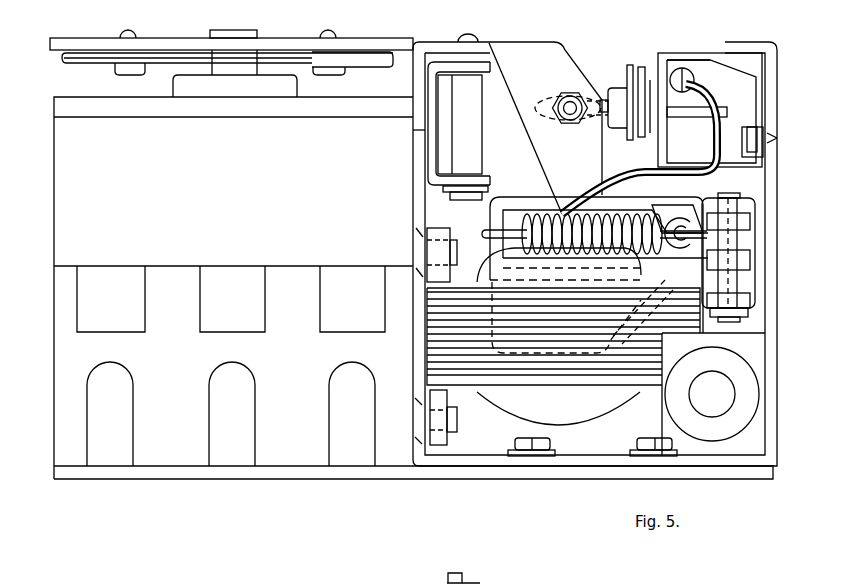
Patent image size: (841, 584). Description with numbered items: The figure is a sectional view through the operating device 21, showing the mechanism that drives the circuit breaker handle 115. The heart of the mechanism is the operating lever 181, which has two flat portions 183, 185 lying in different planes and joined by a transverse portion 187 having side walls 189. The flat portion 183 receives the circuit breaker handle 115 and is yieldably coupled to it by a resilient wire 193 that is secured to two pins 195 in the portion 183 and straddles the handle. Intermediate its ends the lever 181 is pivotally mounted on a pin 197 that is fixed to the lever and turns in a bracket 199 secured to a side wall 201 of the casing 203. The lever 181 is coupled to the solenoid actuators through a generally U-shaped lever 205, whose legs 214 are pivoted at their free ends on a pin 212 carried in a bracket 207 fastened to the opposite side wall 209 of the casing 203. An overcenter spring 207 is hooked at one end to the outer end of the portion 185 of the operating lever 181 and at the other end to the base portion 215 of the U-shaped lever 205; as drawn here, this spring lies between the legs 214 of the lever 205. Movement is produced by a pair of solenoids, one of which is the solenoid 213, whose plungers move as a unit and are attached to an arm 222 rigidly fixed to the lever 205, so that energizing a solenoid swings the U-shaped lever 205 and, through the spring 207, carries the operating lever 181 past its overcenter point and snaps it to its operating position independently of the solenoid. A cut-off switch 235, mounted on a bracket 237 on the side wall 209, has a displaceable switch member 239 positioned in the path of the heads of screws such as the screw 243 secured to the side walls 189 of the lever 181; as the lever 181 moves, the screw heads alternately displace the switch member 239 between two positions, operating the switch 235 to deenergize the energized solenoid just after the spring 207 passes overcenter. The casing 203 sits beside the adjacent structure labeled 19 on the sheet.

The base block 19 is at (228, 194).
The operating device 21 is at (491, 153).
The circuit breaker handle 115 is at (233, 32).
The operating lever 181 is at (397, 42).
The flat portion 183 is at (372, 45).
The flat portion 185 is at (703, 200).
The transverse portion 187 is at (519, 123).
The side walls 189 is at (507, 47).
The resilient wire 193 is at (282, 58).
The pins 195 is at (128, 32).
The pin 197 is at (458, 145).
The bracket 199 is at (433, 81).
The side wall 201 is at (418, 212).
The casing 203 is at (480, 463).
The U-shaped lever 205 is at (518, 200).
The overcenter spring 207 is at (570, 213).
The side wall 209 is at (768, 333).
The pin 212 is at (727, 238).
The solenoid 213 is at (545, 413).
The legs 214 is at (640, 193).
The base portion 215 is at (500, 217).
The arm 222 is at (492, 323).
The cut-off switch 235 is at (630, 77).
The bracket 237 is at (680, 172).
The switch member 239 is at (603, 100).
The screw 243 is at (571, 120).